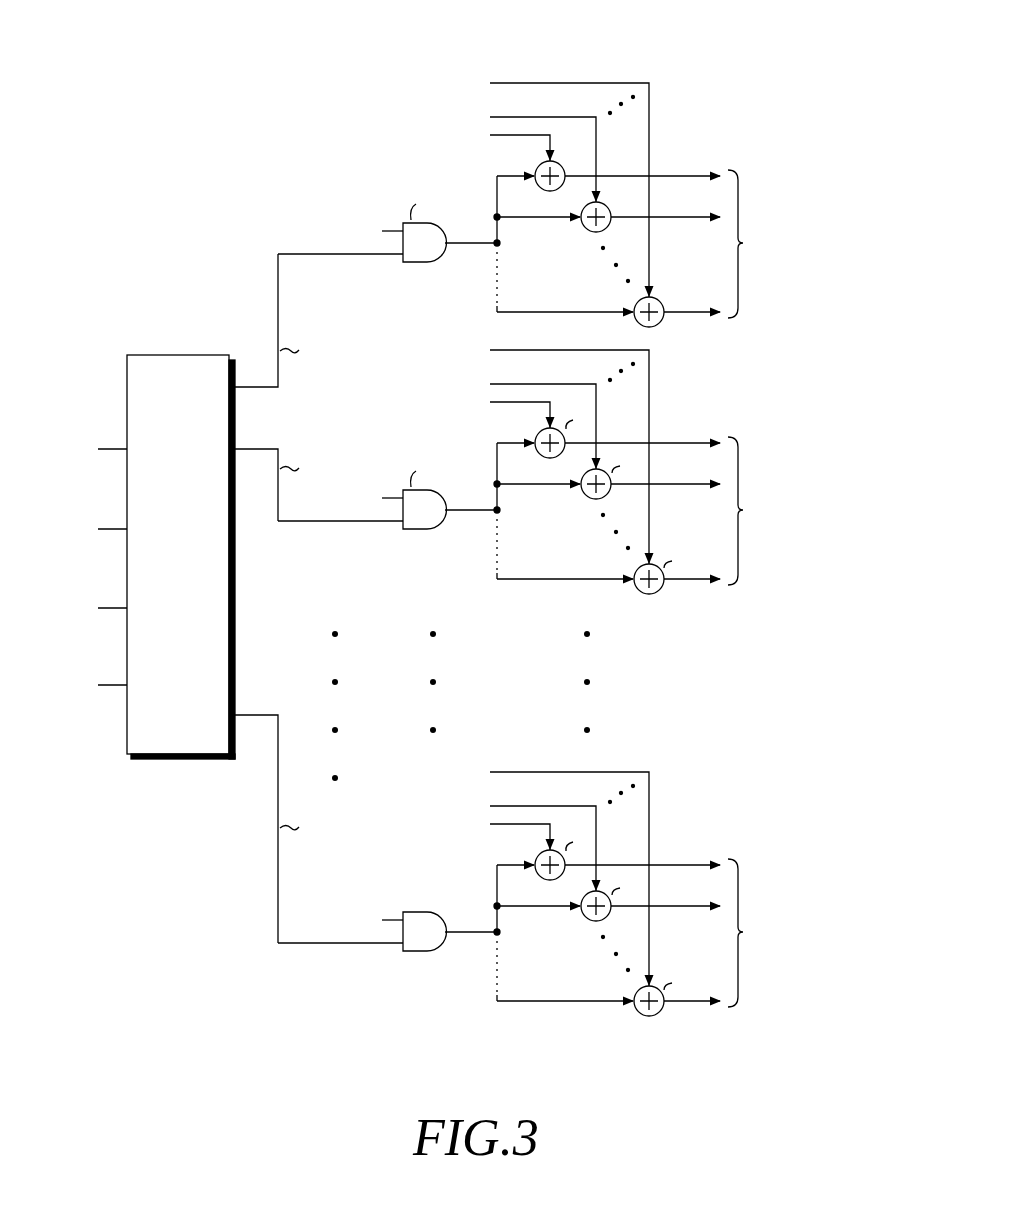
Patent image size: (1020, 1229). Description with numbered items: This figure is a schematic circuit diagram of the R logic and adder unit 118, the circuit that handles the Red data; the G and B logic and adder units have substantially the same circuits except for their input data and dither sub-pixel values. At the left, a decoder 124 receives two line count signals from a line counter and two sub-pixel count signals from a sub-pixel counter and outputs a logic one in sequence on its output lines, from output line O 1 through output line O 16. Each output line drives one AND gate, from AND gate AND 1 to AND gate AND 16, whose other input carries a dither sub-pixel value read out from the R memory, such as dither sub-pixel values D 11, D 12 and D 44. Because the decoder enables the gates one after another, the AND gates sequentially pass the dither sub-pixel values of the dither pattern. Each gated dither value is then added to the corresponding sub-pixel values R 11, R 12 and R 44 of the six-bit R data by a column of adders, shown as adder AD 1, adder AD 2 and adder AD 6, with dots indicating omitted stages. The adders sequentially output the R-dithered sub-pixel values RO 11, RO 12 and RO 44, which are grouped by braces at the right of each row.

The R logic and adder unit 118 is at (589, 30).
The decoder 124 is at (176, 355).
The first sub-pixel position index (D11, R11, RO11) 11 is at (490, 80).
The second sub-pixel position index (D12, R12, RO12) 12 is at (531, 470).
The last sub-pixel position index (D44, R44, RO44) 44 is at (531, 892).
The first adder / first output line and AND gate index (AD1, O1, AND1) 1 is at (573, 153).
The second adder index (AD2) 2 is at (620, 199).
The sixth adder index (AD6) 6 is at (672, 294).
The sixteenth output line and AND gate index (O16, AND16) 16 is at (444, 911).